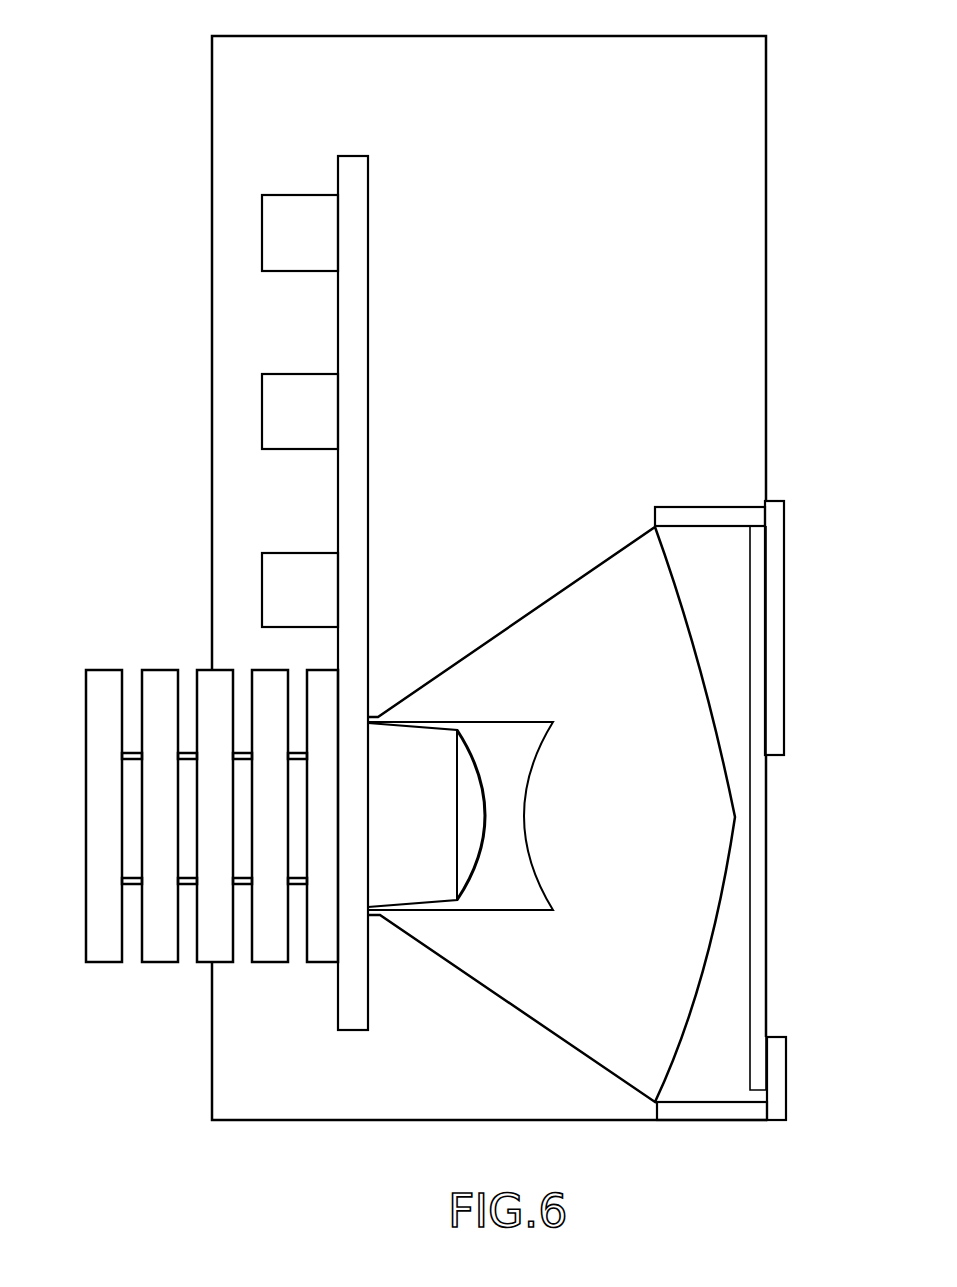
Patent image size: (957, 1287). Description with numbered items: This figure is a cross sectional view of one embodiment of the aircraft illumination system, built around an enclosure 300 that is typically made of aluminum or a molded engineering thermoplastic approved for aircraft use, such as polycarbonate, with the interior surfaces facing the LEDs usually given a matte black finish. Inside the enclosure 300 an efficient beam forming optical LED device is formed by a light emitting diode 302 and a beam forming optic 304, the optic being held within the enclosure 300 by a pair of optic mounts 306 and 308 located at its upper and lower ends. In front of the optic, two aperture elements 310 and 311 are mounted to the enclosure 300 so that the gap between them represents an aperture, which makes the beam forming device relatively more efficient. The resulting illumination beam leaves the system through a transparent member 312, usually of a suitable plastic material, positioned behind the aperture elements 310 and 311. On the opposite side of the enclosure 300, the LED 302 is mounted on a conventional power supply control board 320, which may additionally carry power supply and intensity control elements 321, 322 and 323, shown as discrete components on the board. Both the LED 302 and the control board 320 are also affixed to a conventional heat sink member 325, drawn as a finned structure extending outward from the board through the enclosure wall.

The enclosure 300 is at (212, 364).
The light emitting diode 302 is at (447, 812).
The beam forming optic 304 is at (560, 605).
The optic mount 306 is at (722, 505).
The optic mount 308 is at (712, 1090).
The aperture element 310 is at (788, 610).
The aperture element 311 is at (787, 1060).
The transparent member 312 is at (770, 883).
The power supply control board 320 is at (368, 324).
The power supply and intensity control element 321 is at (300, 233).
The power supply and intensity control element 322 is at (300, 411).
The power supply and intensity control element 323 is at (300, 590).
The heat sink member 325 is at (100, 964).